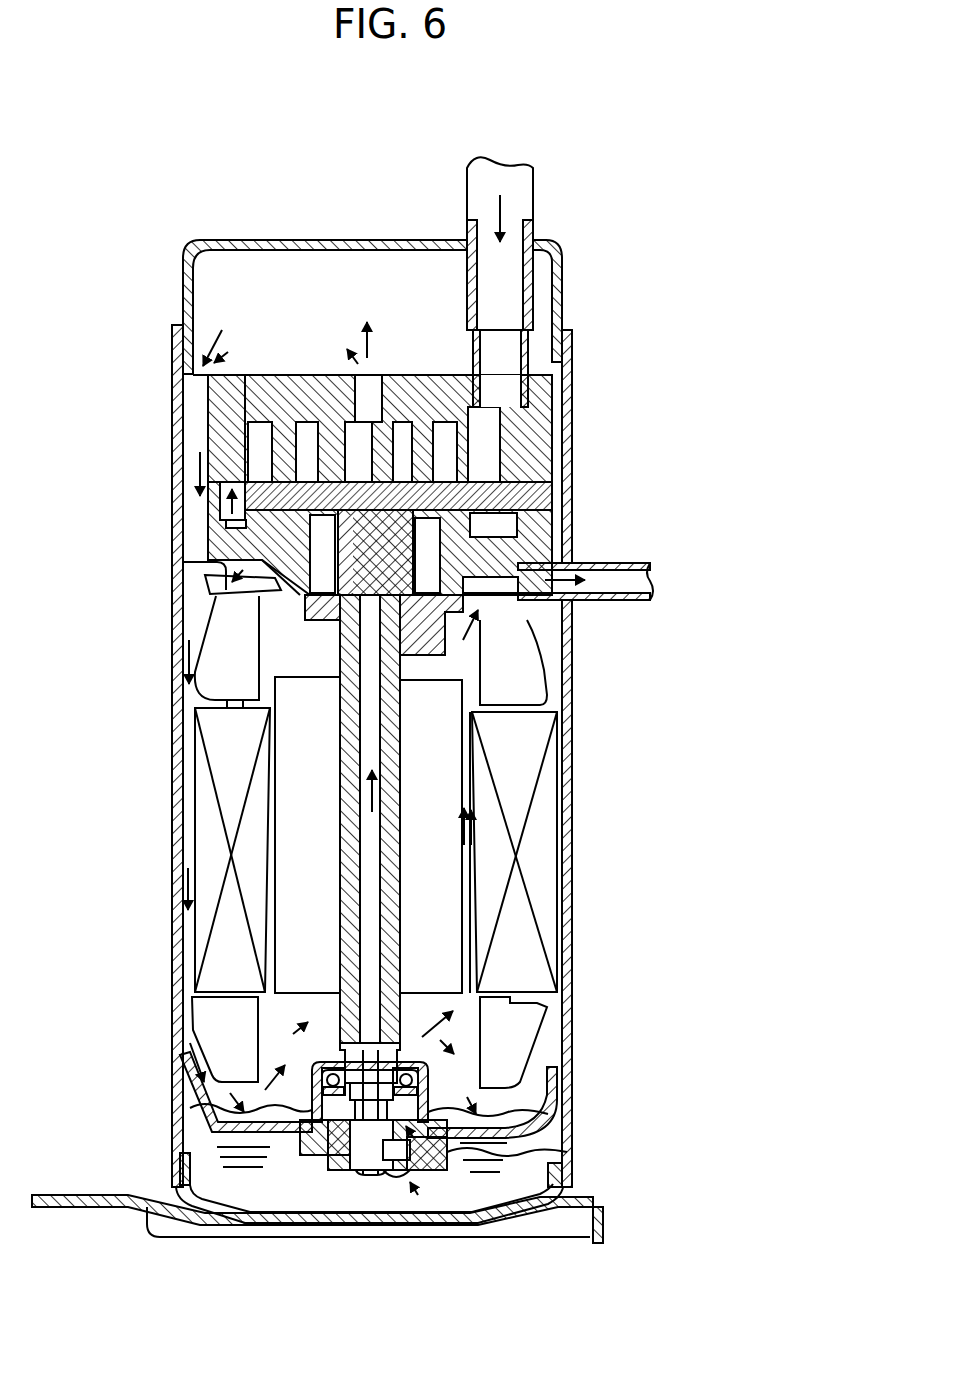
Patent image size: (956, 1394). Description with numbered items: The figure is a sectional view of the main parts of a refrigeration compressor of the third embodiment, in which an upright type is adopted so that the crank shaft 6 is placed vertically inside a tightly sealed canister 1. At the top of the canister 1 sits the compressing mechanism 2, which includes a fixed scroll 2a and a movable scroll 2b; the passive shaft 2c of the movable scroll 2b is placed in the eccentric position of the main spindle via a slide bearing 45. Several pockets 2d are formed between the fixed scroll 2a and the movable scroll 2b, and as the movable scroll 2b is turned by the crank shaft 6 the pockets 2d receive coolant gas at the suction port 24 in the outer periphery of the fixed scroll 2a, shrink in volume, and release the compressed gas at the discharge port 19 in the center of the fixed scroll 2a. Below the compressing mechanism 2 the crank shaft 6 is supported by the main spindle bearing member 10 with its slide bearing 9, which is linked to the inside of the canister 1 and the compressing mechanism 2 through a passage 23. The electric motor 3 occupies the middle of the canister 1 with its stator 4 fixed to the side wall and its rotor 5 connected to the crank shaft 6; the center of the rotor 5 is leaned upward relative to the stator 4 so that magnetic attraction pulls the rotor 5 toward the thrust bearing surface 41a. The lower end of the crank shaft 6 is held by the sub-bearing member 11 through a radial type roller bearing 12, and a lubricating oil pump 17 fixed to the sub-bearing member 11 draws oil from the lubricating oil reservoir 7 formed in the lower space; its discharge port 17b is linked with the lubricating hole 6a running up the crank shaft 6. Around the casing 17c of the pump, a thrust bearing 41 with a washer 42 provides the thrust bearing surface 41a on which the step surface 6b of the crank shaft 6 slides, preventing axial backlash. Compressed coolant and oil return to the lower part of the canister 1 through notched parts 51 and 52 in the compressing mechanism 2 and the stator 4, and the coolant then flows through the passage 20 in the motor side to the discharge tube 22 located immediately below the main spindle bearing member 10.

The tightly sealed canister 1 is at (172, 970).
The compressing mechanism 2 is at (216, 457).
The fixed scroll 2a is at (222, 440).
The movable scroll 2b is at (475, 463).
The passive shaft 2c is at (222, 530).
The pockets 2d is at (303, 417).
The electric motor 3 is at (298, 770).
The stator 4 is at (227, 730).
The rotor 5 is at (297, 827).
The crank shaft 6 is at (400, 753).
The lubricating hole 6a is at (372, 884).
The step surface 6b is at (365, 1117).
The lubricating oil reservoir 7 is at (465, 1190).
The slide bearing 9 is at (190, 630).
The main spindle bearing member 10 is at (480, 608).
The sub-bearing member 11 is at (560, 1113).
The radial type roller bearing 12 is at (480, 1072).
The lubricating oil pump 17 is at (443, 1150).
The discharge port 17b is at (387, 1170).
The casing 17c is at (300, 1163).
The discharge port 19 is at (373, 393).
The passage 20 is at (467, 938).
The discharge tube 22 is at (637, 603).
The passage 23 is at (235, 548).
The suction port 24 is at (510, 422).
The thrust bearing 41 is at (313, 1170).
The thrust bearing surface 41a is at (388, 1095).
The washer 42 is at (307, 1100).
The slide bearing 45 is at (207, 583).
The notched part 51 is at (197, 388).
The notched part 52 is at (187, 927).